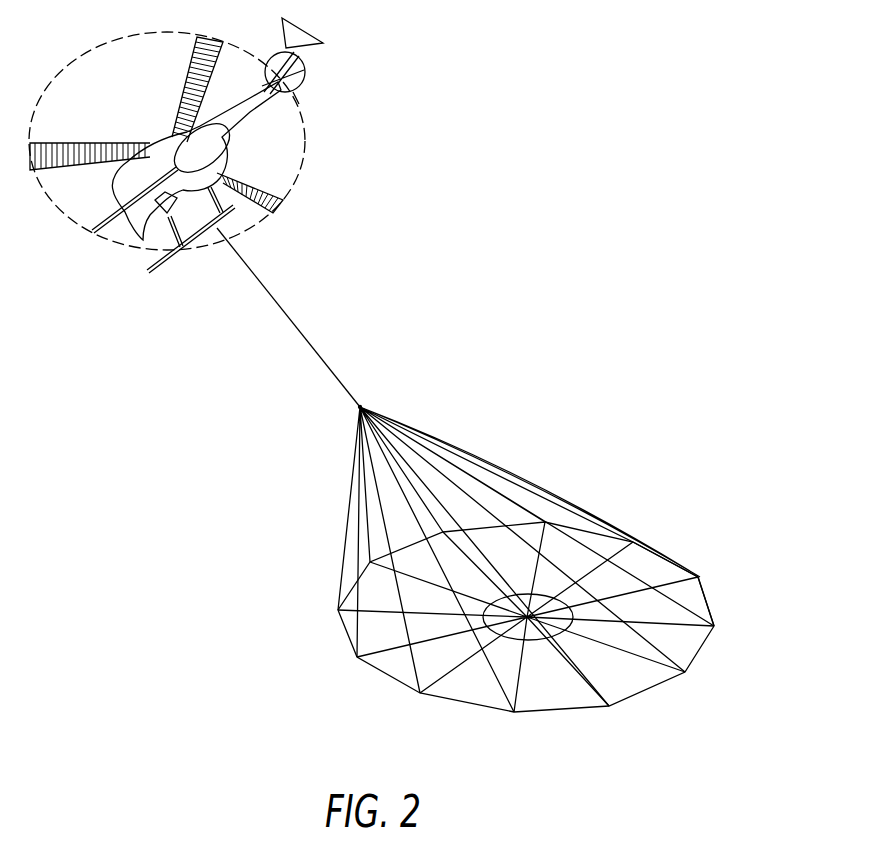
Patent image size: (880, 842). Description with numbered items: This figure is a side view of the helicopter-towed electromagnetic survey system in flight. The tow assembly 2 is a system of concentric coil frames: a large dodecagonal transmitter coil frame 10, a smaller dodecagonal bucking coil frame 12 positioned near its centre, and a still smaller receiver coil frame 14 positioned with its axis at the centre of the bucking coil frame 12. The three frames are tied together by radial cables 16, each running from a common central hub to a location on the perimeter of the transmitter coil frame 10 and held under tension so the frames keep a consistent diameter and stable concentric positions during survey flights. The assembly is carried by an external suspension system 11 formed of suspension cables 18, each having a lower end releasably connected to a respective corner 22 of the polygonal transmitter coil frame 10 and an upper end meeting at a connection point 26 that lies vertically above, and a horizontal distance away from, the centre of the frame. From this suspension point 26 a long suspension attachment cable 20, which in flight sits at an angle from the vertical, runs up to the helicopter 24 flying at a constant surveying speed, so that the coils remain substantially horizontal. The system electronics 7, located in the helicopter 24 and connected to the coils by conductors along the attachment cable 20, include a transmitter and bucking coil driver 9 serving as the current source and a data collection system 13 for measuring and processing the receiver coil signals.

The tow assembly 2 is at (538, 423).
The system electronics 7 is at (150, 270).
The transmitter and bucking coil driver 9 is at (150, 270).
The data collection system 13 is at (150, 270).
The transmitter coil frame 10 is at (564, 647).
The suspension system 11 is at (318, 505).
The bucking coil frame 12 is at (540, 640).
The receiver coil frame 14 is at (507, 642).
The radial cables 16 is at (700, 579).
The suspension cables 18 is at (581, 511).
The suspension attachment cable 20 is at (307, 337).
The corner 22 is at (717, 626).
The helicopter 24 is at (218, 180).
The connection point 26 is at (365, 402).